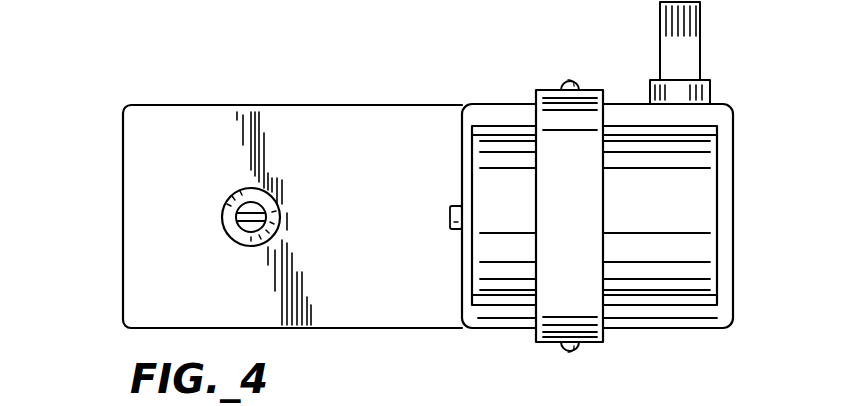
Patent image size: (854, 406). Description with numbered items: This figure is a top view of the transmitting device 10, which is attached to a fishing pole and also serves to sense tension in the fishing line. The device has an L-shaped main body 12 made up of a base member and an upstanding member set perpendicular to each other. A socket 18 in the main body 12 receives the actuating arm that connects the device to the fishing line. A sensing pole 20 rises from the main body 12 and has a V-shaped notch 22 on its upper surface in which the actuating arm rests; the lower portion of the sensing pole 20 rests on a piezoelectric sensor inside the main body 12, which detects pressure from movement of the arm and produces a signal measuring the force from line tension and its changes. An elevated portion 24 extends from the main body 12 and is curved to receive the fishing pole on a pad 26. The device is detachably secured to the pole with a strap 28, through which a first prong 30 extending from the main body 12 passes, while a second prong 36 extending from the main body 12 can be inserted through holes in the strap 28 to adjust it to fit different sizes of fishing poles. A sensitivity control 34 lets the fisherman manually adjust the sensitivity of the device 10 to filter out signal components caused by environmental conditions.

The transmitting device 10 is at (420, 197).
The main body 12 is at (173, 105).
The socket 18 is at (450, 210).
The sensing pole 20 is at (253, 246).
The V-shaped notch 22 is at (246, 207).
The elevated portion 24 is at (655, 327).
The pad 26 is at (718, 213).
The strap 28 is at (535, 342).
The first prong 30 is at (572, 355).
The sensitivity control 34 is at (703, 25).
The second prong 36 is at (565, 77).